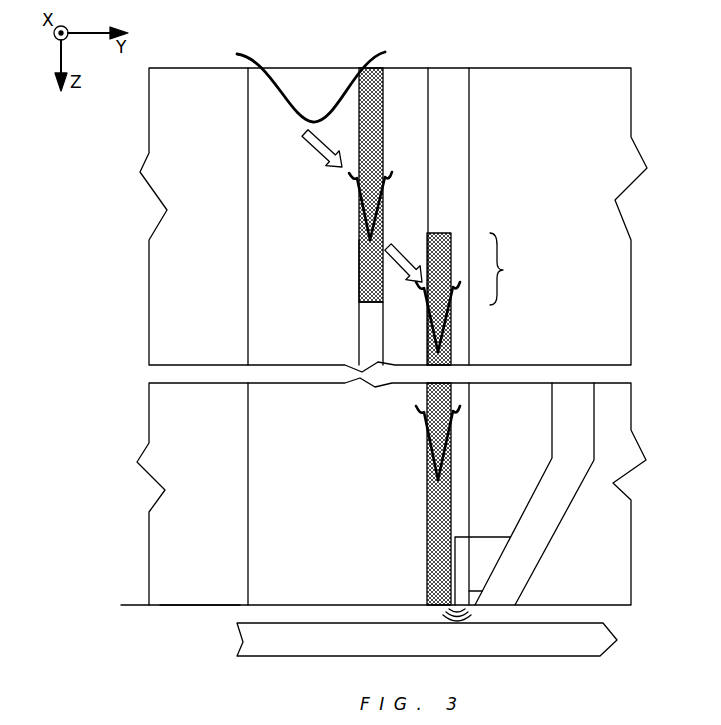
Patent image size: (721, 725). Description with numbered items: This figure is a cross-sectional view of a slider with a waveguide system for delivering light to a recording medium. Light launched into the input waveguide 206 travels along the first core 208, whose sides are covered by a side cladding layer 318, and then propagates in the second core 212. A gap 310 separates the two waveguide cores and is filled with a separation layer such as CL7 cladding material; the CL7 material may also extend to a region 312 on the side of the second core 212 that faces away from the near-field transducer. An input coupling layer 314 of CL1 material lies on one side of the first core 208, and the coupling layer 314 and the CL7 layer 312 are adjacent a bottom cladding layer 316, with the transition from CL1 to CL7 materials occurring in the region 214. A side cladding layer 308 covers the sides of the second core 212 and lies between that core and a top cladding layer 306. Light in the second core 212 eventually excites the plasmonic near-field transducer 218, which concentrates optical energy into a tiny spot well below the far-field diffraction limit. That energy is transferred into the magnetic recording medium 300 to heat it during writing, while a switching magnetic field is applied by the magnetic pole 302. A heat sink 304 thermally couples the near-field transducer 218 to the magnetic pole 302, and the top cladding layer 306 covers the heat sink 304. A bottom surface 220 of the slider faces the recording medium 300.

The input waveguide 206 is at (383, 87).
The first core 208 is at (359, 270).
The second core 212 is at (456, 320).
The region 214 is at (517, 269).
The near-field transducer 218 is at (466, 538).
The bottom surface 220 is at (134, 607).
The magnetic recording medium 300 is at (608, 628).
The magnetic pole 302 is at (545, 543).
The heat sink 304 is at (484, 540).
The top cladding layer 306 is at (522, 86).
The side cladding layer 308 is at (448, 78).
The gap 310 is at (412, 248).
The region 312 is at (278, 571).
The input coupling layer 314 is at (303, 83).
The bottom cladding layer 316 is at (163, 276).
The side cladding layer 318 is at (359, 318).